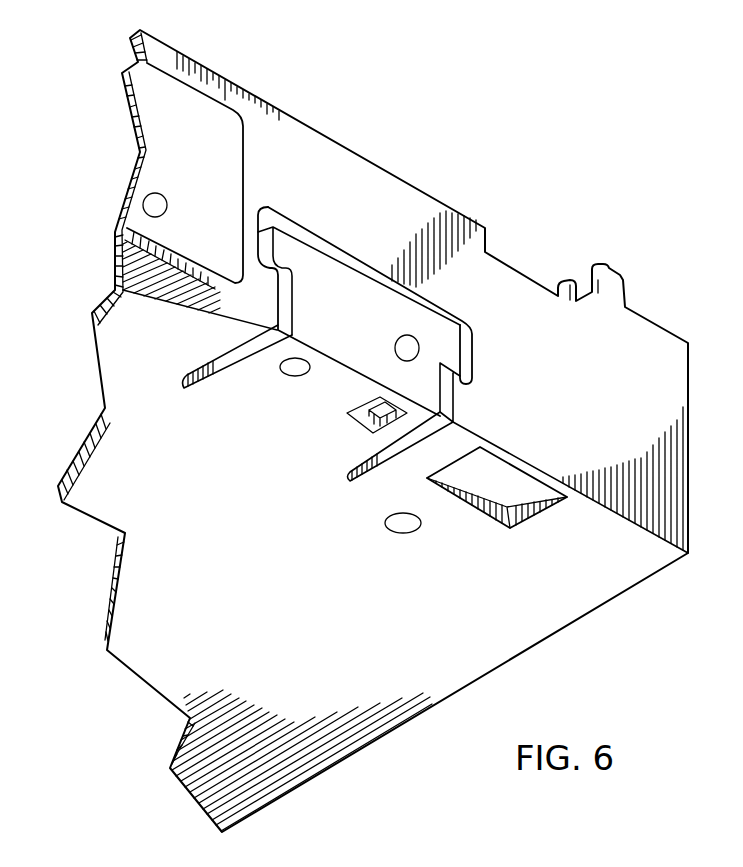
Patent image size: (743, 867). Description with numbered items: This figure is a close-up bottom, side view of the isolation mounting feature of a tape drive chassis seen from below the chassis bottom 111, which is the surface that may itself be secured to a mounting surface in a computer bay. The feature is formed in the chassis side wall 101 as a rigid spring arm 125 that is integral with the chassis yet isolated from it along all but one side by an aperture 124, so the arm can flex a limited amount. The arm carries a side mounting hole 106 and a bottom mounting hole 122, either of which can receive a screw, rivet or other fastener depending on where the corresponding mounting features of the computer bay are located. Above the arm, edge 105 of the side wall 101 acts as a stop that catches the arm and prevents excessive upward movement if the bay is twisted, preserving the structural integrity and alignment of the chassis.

The side wall 101 is at (658, 346).
The edge 105 is at (372, 268).
The side mounting hole 106 is at (398, 340).
The bottom 111 is at (398, 706).
The bottom mounting hole 122 is at (285, 377).
The aperture 124 is at (365, 484).
The rigid spring arm 125 is at (312, 432).